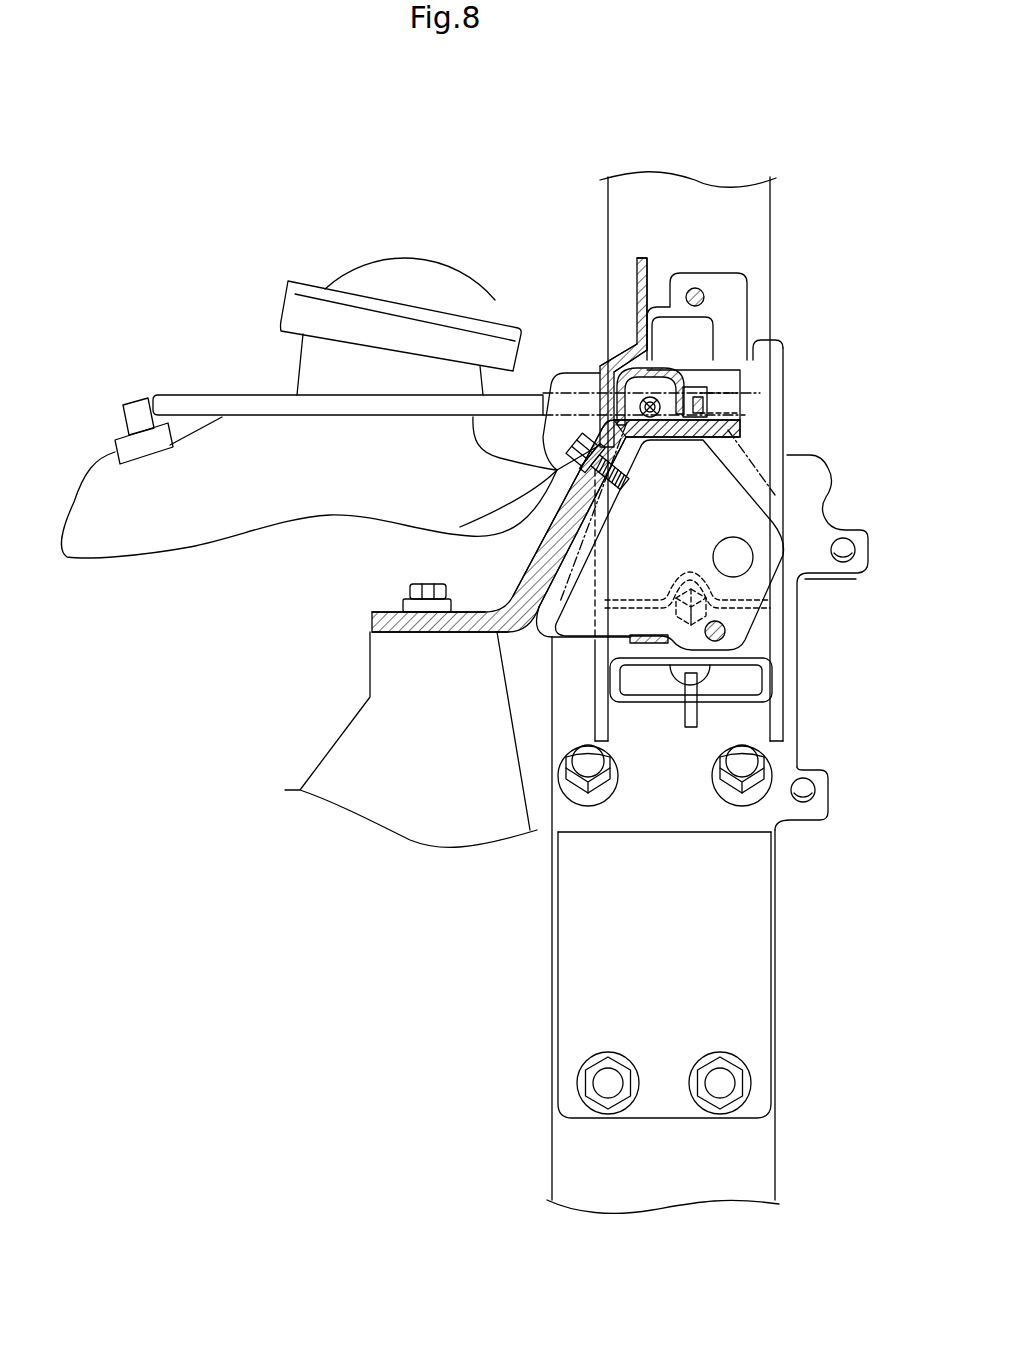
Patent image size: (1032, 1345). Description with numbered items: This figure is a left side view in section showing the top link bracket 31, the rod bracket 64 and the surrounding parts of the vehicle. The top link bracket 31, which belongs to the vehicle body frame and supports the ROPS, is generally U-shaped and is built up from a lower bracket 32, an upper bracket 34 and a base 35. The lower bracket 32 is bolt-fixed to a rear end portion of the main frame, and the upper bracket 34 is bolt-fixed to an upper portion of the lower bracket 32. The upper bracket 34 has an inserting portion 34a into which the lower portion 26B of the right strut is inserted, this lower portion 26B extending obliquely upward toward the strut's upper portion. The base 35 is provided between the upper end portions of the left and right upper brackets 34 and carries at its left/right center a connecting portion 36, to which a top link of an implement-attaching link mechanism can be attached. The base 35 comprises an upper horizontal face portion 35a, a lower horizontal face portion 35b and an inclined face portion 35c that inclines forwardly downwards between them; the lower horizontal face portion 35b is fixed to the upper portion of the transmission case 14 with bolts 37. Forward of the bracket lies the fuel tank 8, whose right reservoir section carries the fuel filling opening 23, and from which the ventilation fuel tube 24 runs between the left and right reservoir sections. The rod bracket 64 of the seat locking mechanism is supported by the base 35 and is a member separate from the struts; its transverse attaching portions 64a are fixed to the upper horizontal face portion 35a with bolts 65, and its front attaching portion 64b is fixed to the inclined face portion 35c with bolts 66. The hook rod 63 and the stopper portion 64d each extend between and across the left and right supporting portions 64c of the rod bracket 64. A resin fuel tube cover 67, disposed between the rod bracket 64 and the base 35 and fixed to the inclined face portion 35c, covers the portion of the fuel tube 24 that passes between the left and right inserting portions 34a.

The fuel tank 8 is at (198, 550).
The transmission case 14 is at (383, 734).
The fuel filling opening 23 is at (414, 268).
The fuel tube 24 is at (275, 395).
The lower portion of the right strut 26B is at (672, 176).
The top link bracket 31 is at (626, 761).
The lower bracket 32 is at (763, 1168).
The upper bracket 34 is at (713, 713).
The inserting portion 34a is at (787, 362).
The base 35 is at (566, 576).
The upper horizontal face portion 35a is at (742, 436).
The lower horizontal face portion 35b is at (372, 627).
The inclined face portion 35c is at (548, 552).
The connecting portion 36 is at (760, 579).
The bolt 37 is at (419, 592).
The hook rod 63 is at (702, 296).
The rod bracket 64 is at (660, 348).
The transverse attaching portion 64a is at (742, 407).
The front attaching portion 64b is at (548, 486).
The supporting portion 64c is at (690, 276).
The stopper portion 64d is at (636, 297).
The bolt 65 is at (672, 432).
The bolt 66 is at (582, 455).
The fuel tube cover 67 is at (612, 363).